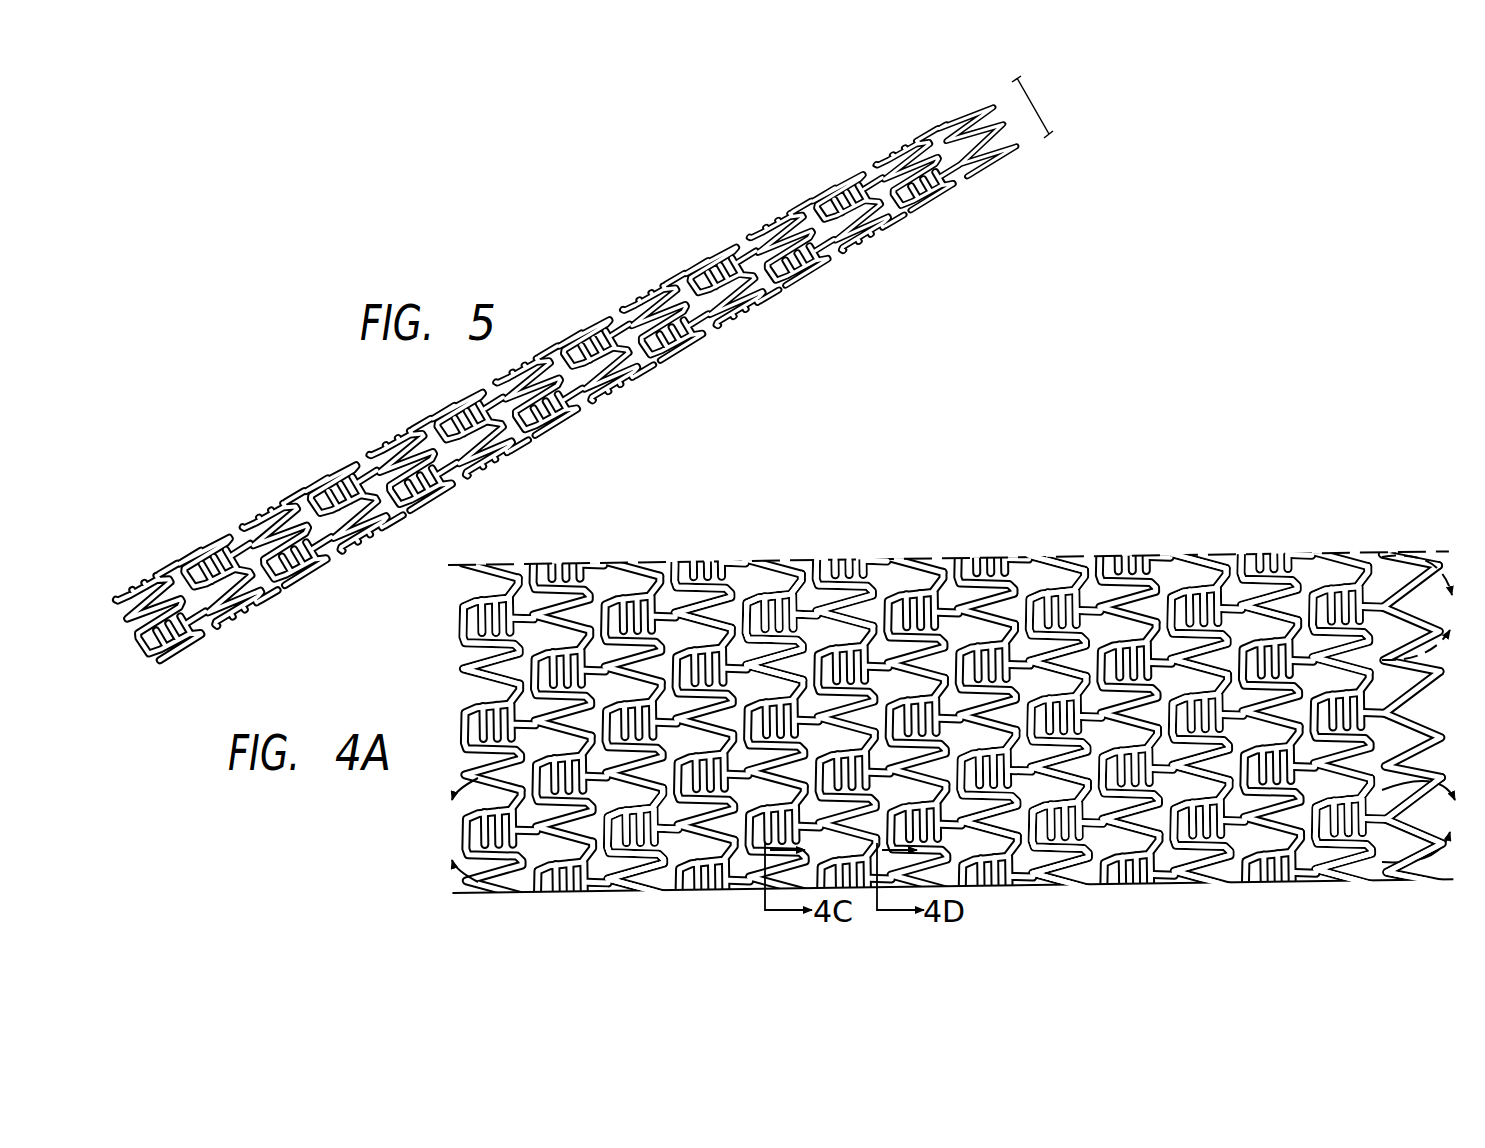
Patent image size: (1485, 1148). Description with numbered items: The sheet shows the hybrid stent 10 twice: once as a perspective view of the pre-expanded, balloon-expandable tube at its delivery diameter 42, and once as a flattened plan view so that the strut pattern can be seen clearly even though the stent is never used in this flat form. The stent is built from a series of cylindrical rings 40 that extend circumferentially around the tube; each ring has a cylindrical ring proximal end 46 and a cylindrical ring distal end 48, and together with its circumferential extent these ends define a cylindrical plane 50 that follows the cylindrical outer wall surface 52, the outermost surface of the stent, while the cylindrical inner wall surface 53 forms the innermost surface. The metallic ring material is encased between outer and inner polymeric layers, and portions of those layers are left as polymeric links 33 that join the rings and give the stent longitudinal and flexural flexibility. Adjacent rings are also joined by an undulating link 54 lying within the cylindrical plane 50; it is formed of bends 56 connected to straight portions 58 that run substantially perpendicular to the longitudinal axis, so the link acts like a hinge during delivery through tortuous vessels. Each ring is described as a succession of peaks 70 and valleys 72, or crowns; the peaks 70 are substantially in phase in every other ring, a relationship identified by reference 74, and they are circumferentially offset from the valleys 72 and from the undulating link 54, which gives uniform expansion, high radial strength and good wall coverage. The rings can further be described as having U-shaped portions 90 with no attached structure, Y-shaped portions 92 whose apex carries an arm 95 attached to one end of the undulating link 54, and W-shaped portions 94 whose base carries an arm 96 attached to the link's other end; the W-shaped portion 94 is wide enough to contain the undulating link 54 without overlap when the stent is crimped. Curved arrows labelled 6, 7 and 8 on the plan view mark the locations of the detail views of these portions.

In FIG. 4A, the hybrid stent 10 is at (978, 547).
In FIG. 4A, the links 33 is at (510, 605).
In FIG. 5, the cylindrical rings 40 is at (478, 490).
In FIG. 4A, the cylindrical rings 40 is at (1125, 548).
In FIG. 5, the delivery diameter 42 is at (1040, 100).
In FIG. 5, the cylindrical ring proximal end 46 is at (910, 152).
In FIG. 4A, the cylindrical ring proximal end 46 is at (1345, 598).
In FIG. 5, the cylindrical ring distal end 48 is at (903, 200).
In FIG. 4A, the cylindrical ring distal end 48 is at (1288, 600).
In FIG. 5, the cylindrical plane 50 is at (870, 250).
In FIG. 5, the cylindrical outer wall surface 52 is at (130, 590).
In FIG. 5, the cylindrical inner wall surface 53 is at (132, 618).
In FIG. 5, the undulating link 54 is at (660, 350).
In FIG. 4A, the undulating link 54 is at (780, 602).
In FIG. 4A, the bends 56 is at (800, 602).
In FIG. 4A, the straight portions 58 is at (728, 602).
In FIG. 4A, the peaks 70 is at (1148, 835).
In FIG. 4A, the valleys 72 is at (978, 840).
In FIG. 4A, the in-phase relationship 74 is at (1085, 800).
In FIG. 4A, the U-shaped portions 90 is at (1385, 838).
In FIG. 4A, the Y-shaped portions 92 is at (1318, 880).
In FIG. 4A, the W-shaped portions 94 is at (1340, 855).
In FIG. 4A, the arm 95 is at (655, 828).
In FIG. 4A, the arm 96 is at (600, 848).
In FIG. 4A, the section view 6 direction 6 is at (455, 830).
In FIG. 4A, the section view 7 direction 7 is at (1427, 608).
In FIG. 4A, the section view 8 direction 8 is at (1425, 821).